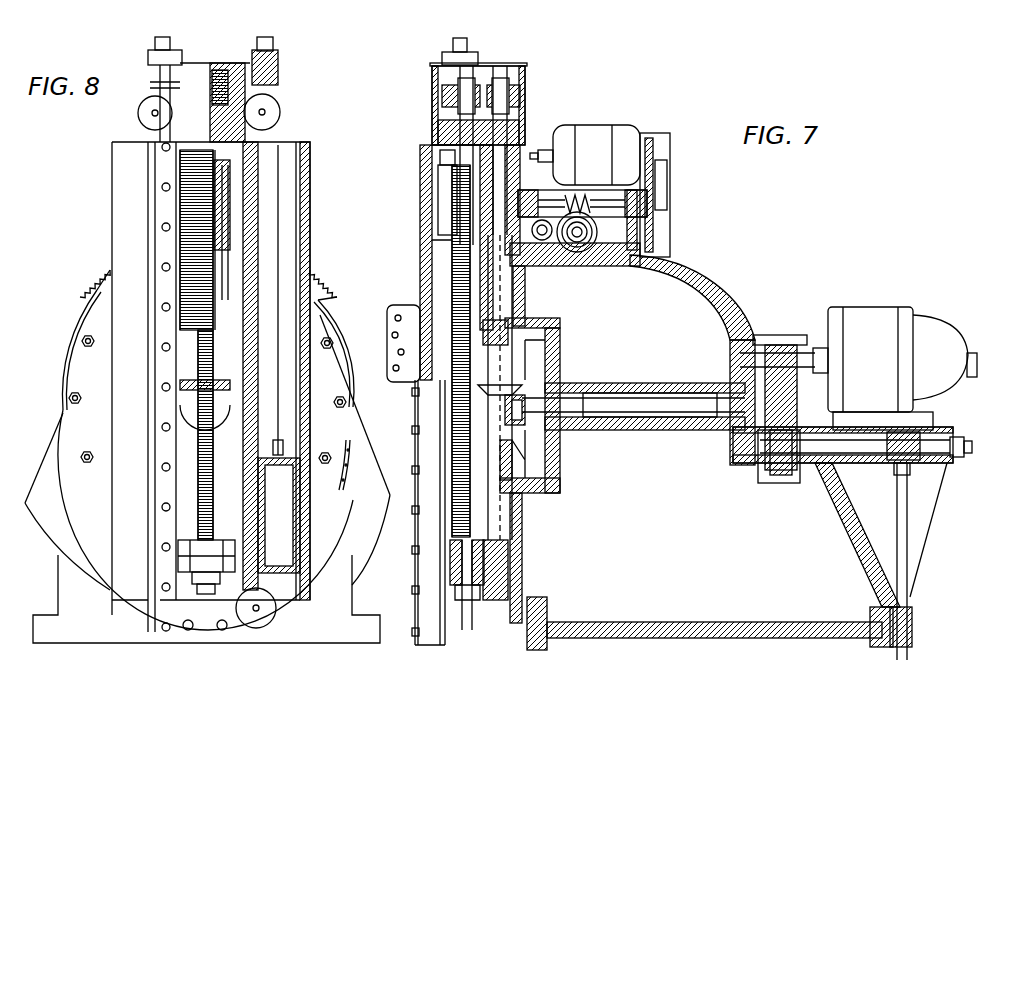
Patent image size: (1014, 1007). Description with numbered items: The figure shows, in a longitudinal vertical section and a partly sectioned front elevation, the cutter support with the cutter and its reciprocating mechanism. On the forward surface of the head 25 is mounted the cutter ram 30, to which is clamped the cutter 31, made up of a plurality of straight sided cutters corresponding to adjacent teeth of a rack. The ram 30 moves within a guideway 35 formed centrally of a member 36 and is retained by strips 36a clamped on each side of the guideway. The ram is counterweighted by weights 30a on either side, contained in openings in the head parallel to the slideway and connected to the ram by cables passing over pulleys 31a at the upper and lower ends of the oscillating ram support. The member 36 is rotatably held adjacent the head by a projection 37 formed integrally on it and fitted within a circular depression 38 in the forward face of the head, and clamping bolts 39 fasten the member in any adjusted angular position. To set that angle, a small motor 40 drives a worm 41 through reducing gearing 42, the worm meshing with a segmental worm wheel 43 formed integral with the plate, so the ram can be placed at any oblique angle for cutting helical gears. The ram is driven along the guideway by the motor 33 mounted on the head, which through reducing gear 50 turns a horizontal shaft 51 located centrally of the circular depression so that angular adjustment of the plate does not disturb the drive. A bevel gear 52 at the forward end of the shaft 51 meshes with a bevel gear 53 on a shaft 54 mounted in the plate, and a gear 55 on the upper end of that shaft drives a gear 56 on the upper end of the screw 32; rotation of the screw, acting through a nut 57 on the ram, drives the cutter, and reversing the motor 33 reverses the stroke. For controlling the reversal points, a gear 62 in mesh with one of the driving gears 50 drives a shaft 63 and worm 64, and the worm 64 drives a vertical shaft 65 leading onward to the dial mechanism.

In FIG. 7, the head 25 is at (706, 288).
In FIG. 7, the cutter ram 30 is at (425, 207).
In FIG. 8, the weights 30a is at (282, 535).
In FIG. 7, the cutter 31 is at (388, 348).
In FIG. 8, the pulleys 31a is at (280, 106).
In FIG. 7, the screw 32 is at (455, 530).
In FIG. 7, the motor 33 is at (878, 313).
In FIG. 8, the guideway 35 is at (180, 445).
In FIG. 8, the member 36 is at (80, 342).
In FIG. 7, the member 36 is at (500, 556).
In FIG. 8, the strips 36a is at (165, 240).
In FIG. 7, the projection 37 is at (532, 482).
In FIG. 7, the circular depression 38 is at (548, 352).
In FIG. 8, the clamping bolts 39 is at (346, 402).
In FIG. 7, the small motor 40 is at (570, 133).
In FIG. 7, the worm 41 is at (522, 196).
In FIG. 7, the reducing gearing 42 is at (668, 182).
In FIG. 8, the segmental worm wheel 43 is at (312, 274).
In FIG. 7, the reducing gear 50 is at (784, 338).
In FIG. 7, the horizontal shaft 51 is at (610, 396).
In FIG. 7, the bevel gear 52 is at (512, 422).
In FIG. 7, the bevel gear 53 is at (488, 396).
In FIG. 7, the shaft 54 is at (505, 145).
In FIG. 7, the gear 55 is at (516, 88).
In FIG. 7, the gear 56 is at (444, 96).
In FIG. 7, the nut 57 is at (445, 174).
In FIG. 7, the gear 62 is at (760, 472).
In FIG. 7, the shaft 63 is at (852, 452).
In FIG. 7, the worm 64 is at (922, 440).
In FIG. 7, the vertical shaft 65 is at (900, 541).